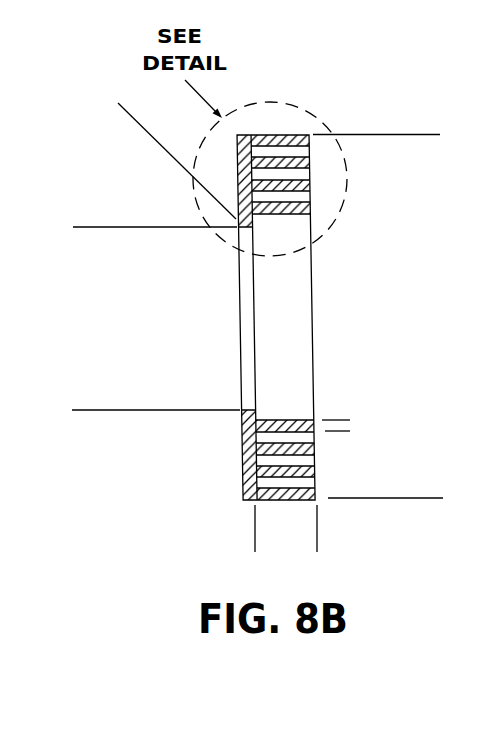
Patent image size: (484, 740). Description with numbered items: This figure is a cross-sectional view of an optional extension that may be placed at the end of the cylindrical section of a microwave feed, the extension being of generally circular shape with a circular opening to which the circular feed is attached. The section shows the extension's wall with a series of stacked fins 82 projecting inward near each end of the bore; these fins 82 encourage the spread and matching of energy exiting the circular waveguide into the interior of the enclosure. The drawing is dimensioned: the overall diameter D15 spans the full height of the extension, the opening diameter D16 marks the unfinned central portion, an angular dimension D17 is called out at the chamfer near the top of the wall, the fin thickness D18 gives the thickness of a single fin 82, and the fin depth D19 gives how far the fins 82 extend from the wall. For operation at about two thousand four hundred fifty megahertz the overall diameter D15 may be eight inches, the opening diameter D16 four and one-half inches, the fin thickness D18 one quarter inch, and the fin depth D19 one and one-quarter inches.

The fins 82 is at (286, 137).
The overall diameter D15 is at (432, 498).
The diameter of the opening D16 is at (83, 227).
The chamfer angle dimension D17 is at (130, 113).
The fin thickness D18 is at (342, 452).
The fin depth D19 is at (347, 538).